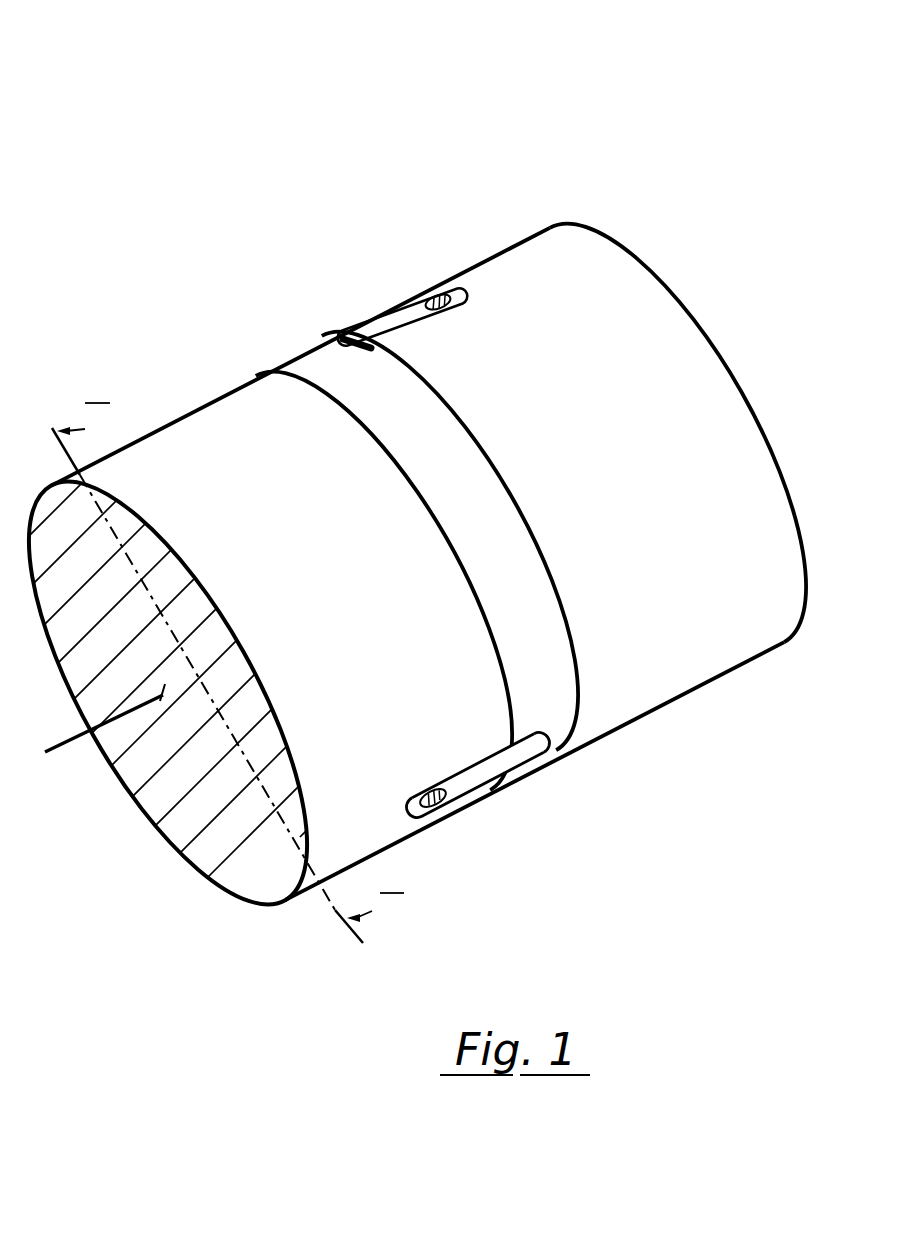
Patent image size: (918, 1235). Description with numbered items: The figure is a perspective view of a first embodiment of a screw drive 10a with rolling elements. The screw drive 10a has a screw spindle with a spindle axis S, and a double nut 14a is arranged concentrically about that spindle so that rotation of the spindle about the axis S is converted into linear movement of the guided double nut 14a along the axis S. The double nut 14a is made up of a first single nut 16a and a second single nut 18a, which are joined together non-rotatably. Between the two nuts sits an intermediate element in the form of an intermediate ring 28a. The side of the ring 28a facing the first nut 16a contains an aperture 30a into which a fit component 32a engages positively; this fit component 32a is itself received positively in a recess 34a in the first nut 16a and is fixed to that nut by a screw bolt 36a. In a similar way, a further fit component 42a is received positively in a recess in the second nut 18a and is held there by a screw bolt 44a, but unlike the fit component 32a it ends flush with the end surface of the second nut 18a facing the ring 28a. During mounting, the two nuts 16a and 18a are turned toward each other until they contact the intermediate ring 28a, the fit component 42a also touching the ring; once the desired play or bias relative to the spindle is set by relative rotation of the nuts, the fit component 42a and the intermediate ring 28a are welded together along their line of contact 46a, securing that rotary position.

The screw drive 10a is at (157, 128).
The double nut 14a is at (657, 212).
The first single nut 16a is at (222, 410).
The second single nut 18a is at (507, 272).
The intermediate ring 28a is at (502, 520).
The aperture 30a is at (520, 730).
The fit component 32a is at (520, 755).
The recess 34a is at (465, 763).
The screw bolt 36a is at (448, 812).
The fit component 42a is at (392, 323).
The screw bolt 44a is at (427, 288).
The line of contact 46a is at (355, 332).
The spindle axis S is at (55, 750).